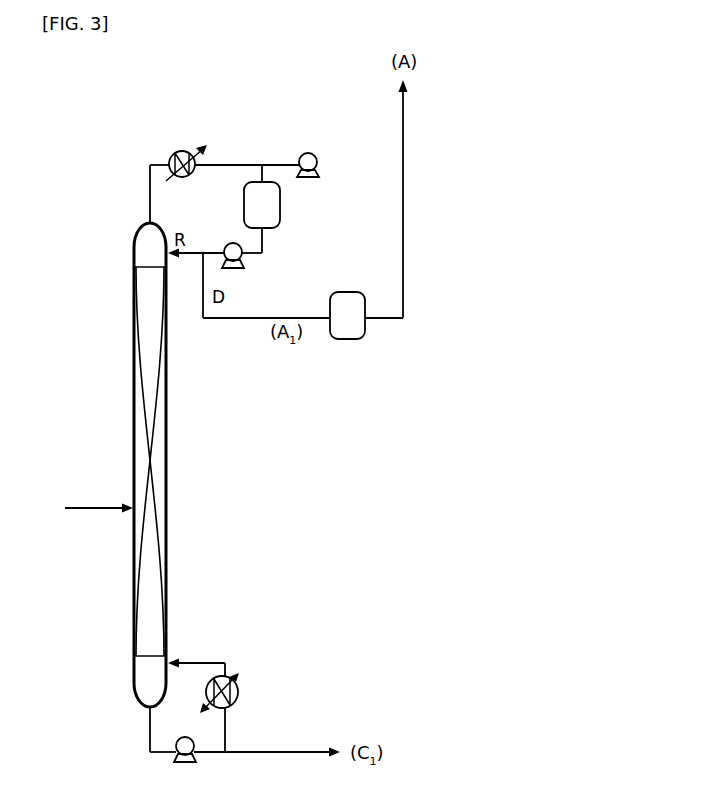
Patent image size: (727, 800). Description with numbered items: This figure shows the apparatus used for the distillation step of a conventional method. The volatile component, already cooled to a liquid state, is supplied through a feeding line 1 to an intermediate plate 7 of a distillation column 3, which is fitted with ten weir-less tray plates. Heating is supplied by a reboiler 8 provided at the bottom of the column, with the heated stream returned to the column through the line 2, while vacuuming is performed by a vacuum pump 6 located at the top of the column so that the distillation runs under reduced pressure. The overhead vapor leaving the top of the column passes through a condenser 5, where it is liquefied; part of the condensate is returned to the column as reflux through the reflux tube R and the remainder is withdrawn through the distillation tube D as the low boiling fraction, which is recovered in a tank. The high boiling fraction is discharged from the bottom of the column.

The feeding line 1 is at (80, 503).
The distillation column 2 is at (210, 662).
The distillation column 3 is at (245, 432).
The condenser 5 is at (186, 143).
The vacuum pump 6 is at (320, 147).
The plate 7 is at (133, 352).
The reboiler 8 is at (238, 687).